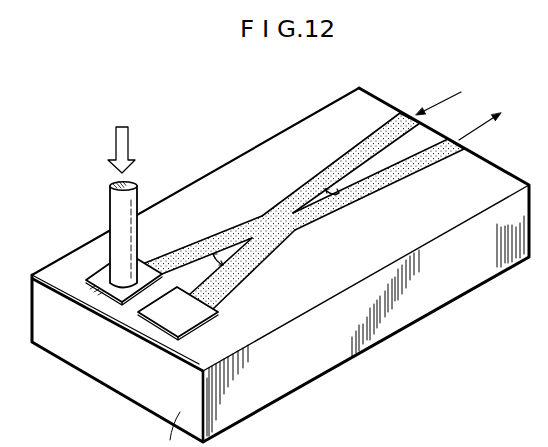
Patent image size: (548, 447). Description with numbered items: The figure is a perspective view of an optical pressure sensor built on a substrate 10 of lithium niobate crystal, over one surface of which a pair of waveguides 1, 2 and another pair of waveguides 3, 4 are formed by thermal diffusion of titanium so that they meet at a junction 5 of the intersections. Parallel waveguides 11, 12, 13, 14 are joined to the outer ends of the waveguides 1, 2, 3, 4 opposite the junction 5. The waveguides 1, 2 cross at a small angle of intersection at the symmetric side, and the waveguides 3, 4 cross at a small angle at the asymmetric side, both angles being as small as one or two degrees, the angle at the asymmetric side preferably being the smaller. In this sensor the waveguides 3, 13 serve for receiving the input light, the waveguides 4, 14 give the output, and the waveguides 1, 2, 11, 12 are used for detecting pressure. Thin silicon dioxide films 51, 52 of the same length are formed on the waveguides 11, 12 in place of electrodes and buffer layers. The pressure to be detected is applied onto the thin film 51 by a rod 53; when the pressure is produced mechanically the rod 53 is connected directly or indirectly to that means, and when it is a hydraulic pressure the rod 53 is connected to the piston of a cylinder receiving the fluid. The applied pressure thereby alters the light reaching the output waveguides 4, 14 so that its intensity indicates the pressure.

The waveguide 1 is at (192, 244).
The waveguide 2 is at (244, 263).
The waveguide 3 is at (334, 170).
The waveguide 4 is at (374, 180).
The junction 5 is at (280, 218).
The substrate 10 is at (459, 282).
The parallel waveguide 11 is at (73, 297).
The parallel waveguide 12 is at (162, 349).
The parallel waveguide 13 is at (393, 112).
The parallel waveguide 14 is at (428, 154).
The thin SiO2 film 51 is at (90, 275).
The thin SiO2 film 52 is at (212, 316).
The rod 53 is at (109, 212).